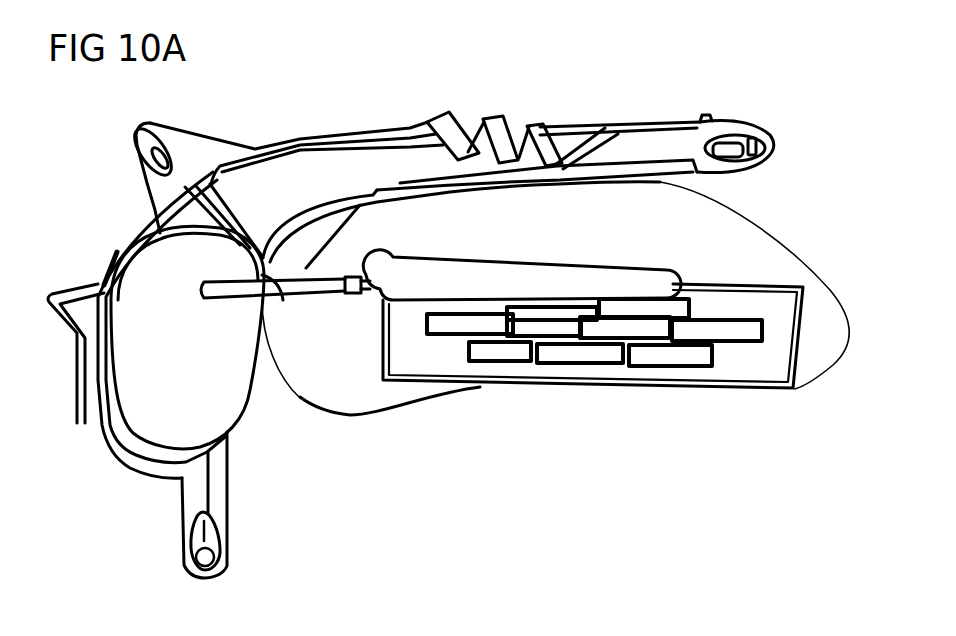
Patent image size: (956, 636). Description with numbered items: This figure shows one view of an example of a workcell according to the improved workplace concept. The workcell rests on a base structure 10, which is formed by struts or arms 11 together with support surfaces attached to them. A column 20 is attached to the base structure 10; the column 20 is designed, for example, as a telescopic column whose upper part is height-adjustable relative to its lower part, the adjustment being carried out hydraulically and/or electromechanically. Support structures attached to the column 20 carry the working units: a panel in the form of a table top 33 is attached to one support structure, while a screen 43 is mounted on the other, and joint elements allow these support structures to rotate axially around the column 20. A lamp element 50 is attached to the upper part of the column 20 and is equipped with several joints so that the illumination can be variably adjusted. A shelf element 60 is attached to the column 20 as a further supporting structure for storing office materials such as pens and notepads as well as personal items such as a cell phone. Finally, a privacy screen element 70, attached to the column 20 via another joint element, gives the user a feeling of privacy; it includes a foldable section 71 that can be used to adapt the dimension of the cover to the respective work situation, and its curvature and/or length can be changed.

The base structure 10 is at (234, 521).
The strut or arm 11 is at (700, 150).
The column 20 is at (284, 308).
The table top 33 is at (792, 251).
The screen 43 is at (771, 394).
The lamp element 50 is at (613, 261).
The shelf element 60 is at (252, 412).
The privacy screen element 70 is at (340, 136).
The foldable section 71 is at (615, 108).